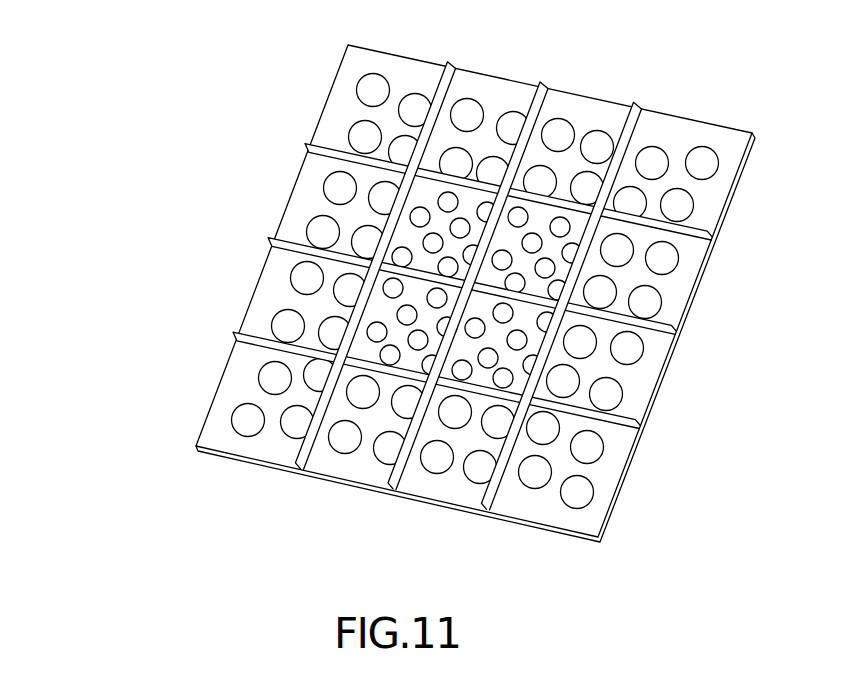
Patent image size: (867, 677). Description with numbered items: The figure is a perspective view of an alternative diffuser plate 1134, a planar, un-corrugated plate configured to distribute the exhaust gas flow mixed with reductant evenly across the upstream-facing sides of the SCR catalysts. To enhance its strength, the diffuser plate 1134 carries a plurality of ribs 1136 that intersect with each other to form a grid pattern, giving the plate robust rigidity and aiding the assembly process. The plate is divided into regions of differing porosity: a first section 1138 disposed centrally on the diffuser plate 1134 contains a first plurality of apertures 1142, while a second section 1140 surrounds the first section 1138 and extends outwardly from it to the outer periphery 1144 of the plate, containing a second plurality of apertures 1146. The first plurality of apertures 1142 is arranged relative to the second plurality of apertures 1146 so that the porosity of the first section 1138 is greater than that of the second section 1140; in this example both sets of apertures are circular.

The diffuser plate 1134 is at (176, 96).
The ribs 1136 is at (620, 125).
The first section 1138 is at (520, 267).
The second section 1140 is at (632, 283).
The first plurality of apertures 1142 is at (445, 200).
The outer periphery 1144 is at (660, 380).
The second plurality of apertures 1146 is at (577, 492).